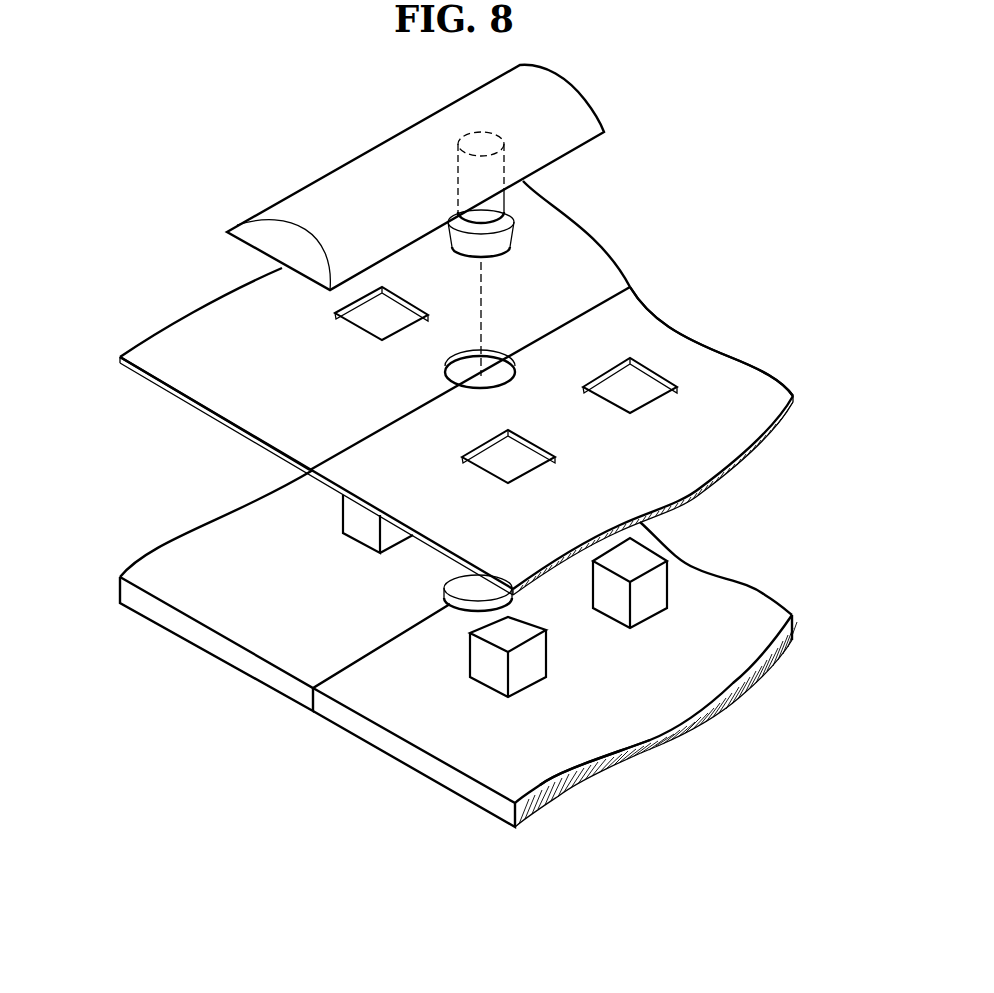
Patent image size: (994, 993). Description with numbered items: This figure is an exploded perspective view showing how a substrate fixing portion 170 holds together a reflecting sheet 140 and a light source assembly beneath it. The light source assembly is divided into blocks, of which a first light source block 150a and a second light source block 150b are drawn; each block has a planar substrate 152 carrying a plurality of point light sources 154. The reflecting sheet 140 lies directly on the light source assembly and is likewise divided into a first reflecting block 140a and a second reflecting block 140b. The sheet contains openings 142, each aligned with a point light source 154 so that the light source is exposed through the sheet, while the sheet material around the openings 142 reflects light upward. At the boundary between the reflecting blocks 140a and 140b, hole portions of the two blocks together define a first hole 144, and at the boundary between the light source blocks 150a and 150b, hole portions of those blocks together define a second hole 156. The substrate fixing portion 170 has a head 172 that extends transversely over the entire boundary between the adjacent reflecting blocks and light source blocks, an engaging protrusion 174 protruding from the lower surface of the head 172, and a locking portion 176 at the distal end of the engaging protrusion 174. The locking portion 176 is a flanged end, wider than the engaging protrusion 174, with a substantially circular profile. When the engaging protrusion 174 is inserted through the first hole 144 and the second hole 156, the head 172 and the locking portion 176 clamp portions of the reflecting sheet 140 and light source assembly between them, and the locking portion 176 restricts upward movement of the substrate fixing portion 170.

The reflecting sheet 140 is at (188, 268).
The first reflecting block 140a is at (160, 342).
The second reflecting block 140b is at (742, 377).
The opening 142 is at (340, 304).
The first hole 144 is at (447, 362).
The first light source block 150a is at (138, 515).
The second light source block 150b is at (672, 770).
The substrate 152 is at (700, 680).
The point light source 154 is at (522, 672).
The second hole 156 is at (447, 583).
The substrate fixing portion 170 is at (485, 220).
The head 172 is at (580, 132).
The engaging protrusion 174 is at (498, 207).
The locking portion 176 is at (497, 240).